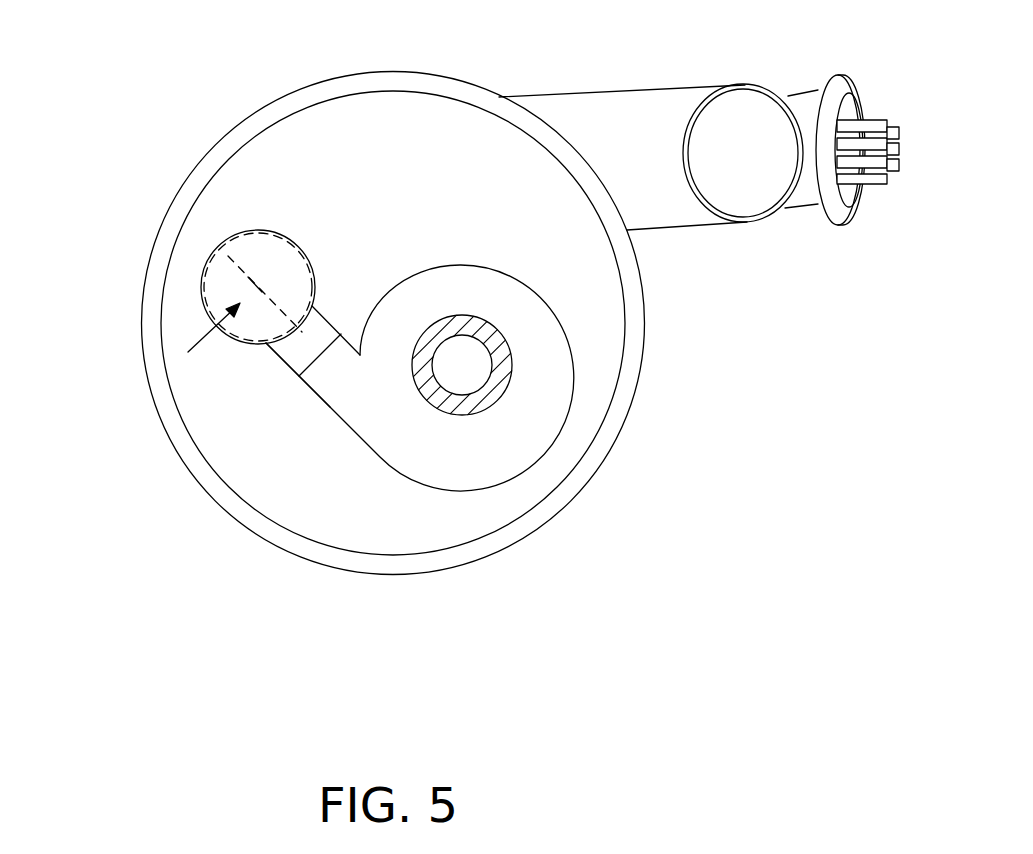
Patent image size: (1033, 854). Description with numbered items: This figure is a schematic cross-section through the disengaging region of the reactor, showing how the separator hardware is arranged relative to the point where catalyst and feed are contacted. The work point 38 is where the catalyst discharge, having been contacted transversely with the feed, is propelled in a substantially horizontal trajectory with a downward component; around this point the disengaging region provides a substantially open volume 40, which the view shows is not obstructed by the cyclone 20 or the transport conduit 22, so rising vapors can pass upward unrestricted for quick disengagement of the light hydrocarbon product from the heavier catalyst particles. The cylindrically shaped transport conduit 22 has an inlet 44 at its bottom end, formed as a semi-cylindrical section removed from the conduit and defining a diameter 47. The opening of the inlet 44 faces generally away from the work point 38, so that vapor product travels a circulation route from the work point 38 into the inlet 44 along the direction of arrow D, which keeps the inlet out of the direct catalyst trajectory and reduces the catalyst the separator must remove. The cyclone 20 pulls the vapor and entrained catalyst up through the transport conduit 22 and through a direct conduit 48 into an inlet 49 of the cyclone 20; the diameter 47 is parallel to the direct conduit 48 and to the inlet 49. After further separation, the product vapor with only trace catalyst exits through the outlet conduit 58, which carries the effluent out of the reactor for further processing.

The cyclone 20 is at (475, 453).
The transport conduit 22 is at (255, 257).
The work point 38 is at (585, 164).
The open volume 40 is at (437, 178).
The inlet 44 is at (245, 287).
The diameter 47 is at (260, 288).
The direct conduit 48 is at (283, 363).
The inlet 49 is at (335, 378).
The outlet conduit 58 is at (500, 382).
The arrow D is at (208, 338).